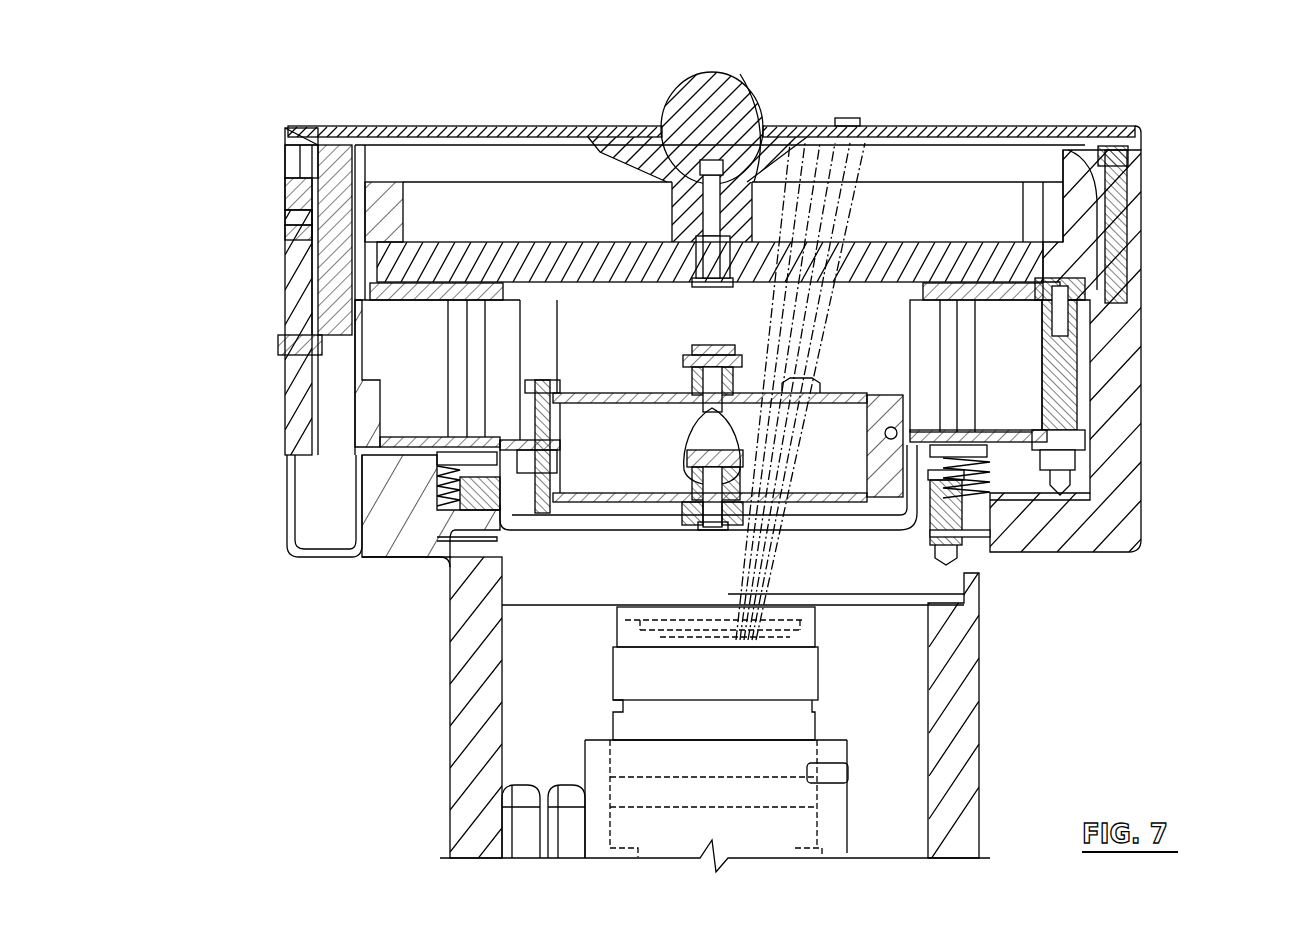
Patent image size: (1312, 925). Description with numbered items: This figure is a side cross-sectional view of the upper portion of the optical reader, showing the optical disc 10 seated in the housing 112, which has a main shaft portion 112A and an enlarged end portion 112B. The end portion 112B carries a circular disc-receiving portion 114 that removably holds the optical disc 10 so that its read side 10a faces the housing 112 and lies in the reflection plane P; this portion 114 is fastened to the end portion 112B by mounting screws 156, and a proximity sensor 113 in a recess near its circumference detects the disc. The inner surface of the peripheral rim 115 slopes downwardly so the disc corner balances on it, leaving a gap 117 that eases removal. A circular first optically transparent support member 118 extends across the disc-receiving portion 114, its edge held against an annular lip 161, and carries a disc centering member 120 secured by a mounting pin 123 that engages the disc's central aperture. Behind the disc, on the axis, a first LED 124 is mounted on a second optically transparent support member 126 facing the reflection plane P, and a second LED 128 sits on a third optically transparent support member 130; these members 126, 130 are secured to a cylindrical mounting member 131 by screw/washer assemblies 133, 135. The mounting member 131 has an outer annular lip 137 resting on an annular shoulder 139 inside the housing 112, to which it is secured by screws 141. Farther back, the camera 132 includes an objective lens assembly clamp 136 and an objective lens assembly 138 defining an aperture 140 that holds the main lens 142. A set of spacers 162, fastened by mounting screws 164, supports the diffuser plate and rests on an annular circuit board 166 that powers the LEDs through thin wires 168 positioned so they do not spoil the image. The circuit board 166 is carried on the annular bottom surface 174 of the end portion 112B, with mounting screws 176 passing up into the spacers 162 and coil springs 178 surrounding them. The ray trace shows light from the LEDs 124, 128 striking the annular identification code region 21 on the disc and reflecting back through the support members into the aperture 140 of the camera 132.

The optical disc 10 is at (1000, 130).
The read side 10a is at (1100, 192).
The annular identification code region 21 is at (800, 365).
The housing 112 is at (1022, 573).
The main shaft portion 112A is at (975, 800).
The enlarged end portion 112B is at (1115, 405).
The proximity sensor 113 is at (292, 237).
The disc-receiving portion 114 is at (285, 195).
The peripheral rim 115 is at (300, 128).
The gap 117 is at (1108, 140).
The first optically transparent support member 118 is at (900, 262).
The disc centering member 120 is at (680, 105).
The mounting pin 123 is at (745, 112).
The first light emitting diode 124 is at (692, 352).
The second optically transparent support member 126 is at (598, 395).
The second light emitting diode 128 is at (695, 455).
The third optically transparent support member 130 is at (613, 495).
The cylindrical mounting member 131 is at (895, 397).
The camera 132 is at (862, 842).
The screw/washer assembly 133 is at (548, 385).
The screw/washer assembly 135 is at (547, 555).
The objective lens assembly clamp 136 is at (840, 817).
The outer annular lip 137 is at (430, 555).
The objective lens assembly 138 is at (797, 677).
The annular shoulder 139 is at (467, 520).
The aperture 140 is at (650, 607).
The screws 141 is at (950, 500).
The main lens 142 is at (700, 620).
The mounting screws 156 is at (1125, 255).
The annular lip 161 is at (440, 265).
The spacers 162 is at (510, 343).
The mounting screws 164 is at (1070, 330).
The annular circuit board 166 is at (420, 437).
The thin wires 168 is at (737, 427).
The annular bottom surface 174 is at (1095, 497).
The mounting screws 176 is at (437, 460).
The coil springs 178 is at (437, 472).
The reflection plane P is at (288, 133).